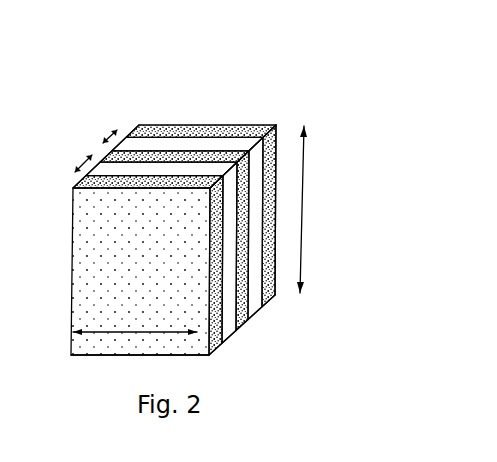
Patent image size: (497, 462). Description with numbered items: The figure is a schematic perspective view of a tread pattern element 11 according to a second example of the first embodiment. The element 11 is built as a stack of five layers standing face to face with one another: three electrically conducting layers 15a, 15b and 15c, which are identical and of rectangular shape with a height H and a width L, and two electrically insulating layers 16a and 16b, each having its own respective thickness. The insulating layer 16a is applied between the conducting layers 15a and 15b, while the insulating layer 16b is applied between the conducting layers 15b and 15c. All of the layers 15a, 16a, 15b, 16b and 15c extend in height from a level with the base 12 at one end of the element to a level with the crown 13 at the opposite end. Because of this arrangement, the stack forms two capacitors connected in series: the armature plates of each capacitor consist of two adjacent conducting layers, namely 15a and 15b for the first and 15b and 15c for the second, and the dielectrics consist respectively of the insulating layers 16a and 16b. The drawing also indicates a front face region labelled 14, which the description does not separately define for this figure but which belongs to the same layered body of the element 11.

The tread pattern element 11 is at (219, 218).
The base 12 is at (103, 358).
The crown 13 is at (243, 118).
The core layer 14 is at (139, 280).
The electrically conducting layer 15a is at (212, 352).
The electrically conducting layer 15b is at (245, 322).
The electrically conducting layer 15c is at (275, 295).
The electrically insulating layer 16a is at (228, 335).
The electrically insulating layer 16b is at (255, 312).